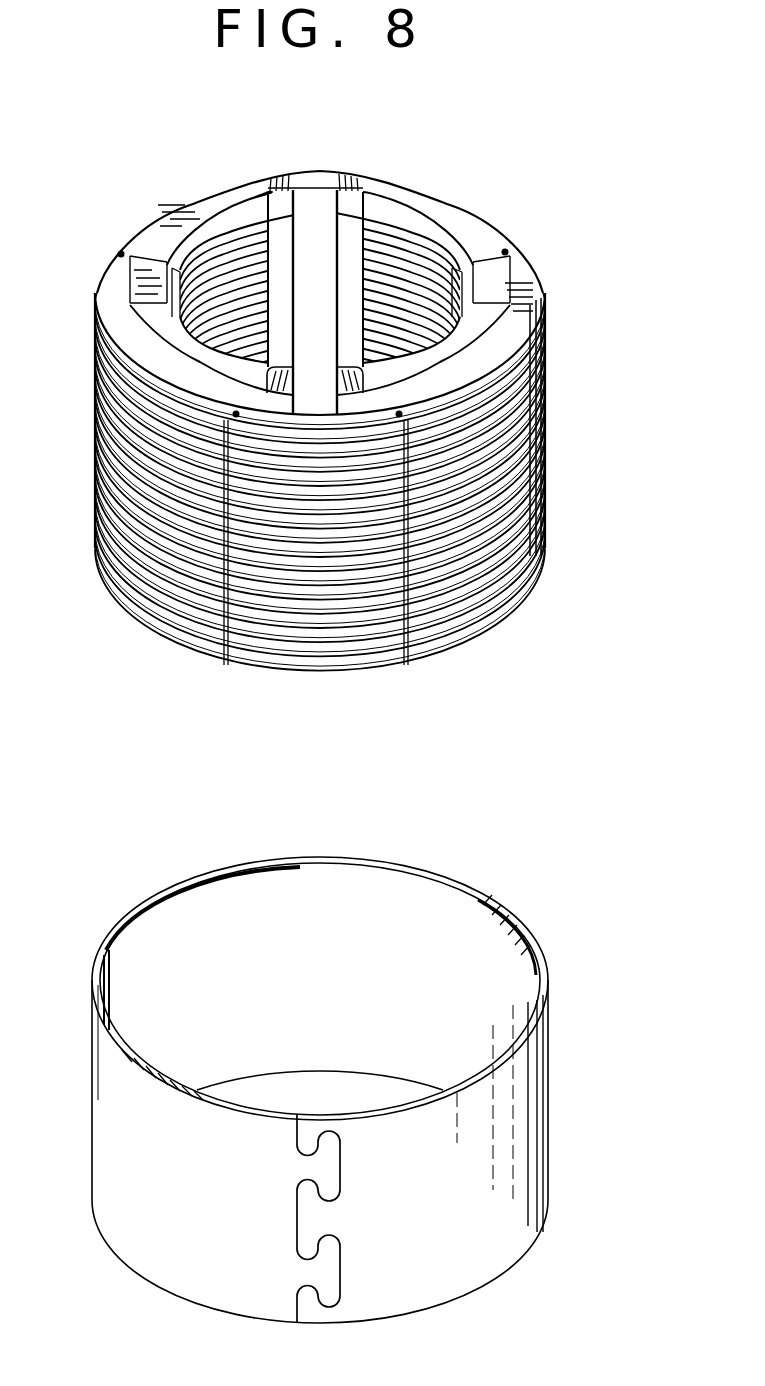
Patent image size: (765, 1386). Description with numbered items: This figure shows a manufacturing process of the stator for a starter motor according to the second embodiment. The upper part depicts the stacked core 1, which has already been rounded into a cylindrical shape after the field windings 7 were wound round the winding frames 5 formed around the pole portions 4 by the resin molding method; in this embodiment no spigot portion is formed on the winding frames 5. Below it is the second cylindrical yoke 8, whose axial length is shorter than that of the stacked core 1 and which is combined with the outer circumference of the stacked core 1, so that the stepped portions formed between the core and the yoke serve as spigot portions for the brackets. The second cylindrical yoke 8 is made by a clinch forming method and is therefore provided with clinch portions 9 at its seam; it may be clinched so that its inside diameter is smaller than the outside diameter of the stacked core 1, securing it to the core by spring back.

The stacked core 1 is at (537, 400).
The pole portion 4 is at (315, 302).
The winding frame 5 is at (262, 230).
The field winding 7 is at (203, 197).
The second cylindrical yoke 8 is at (520, 1197).
The clinch portion 9 is at (297, 1210).